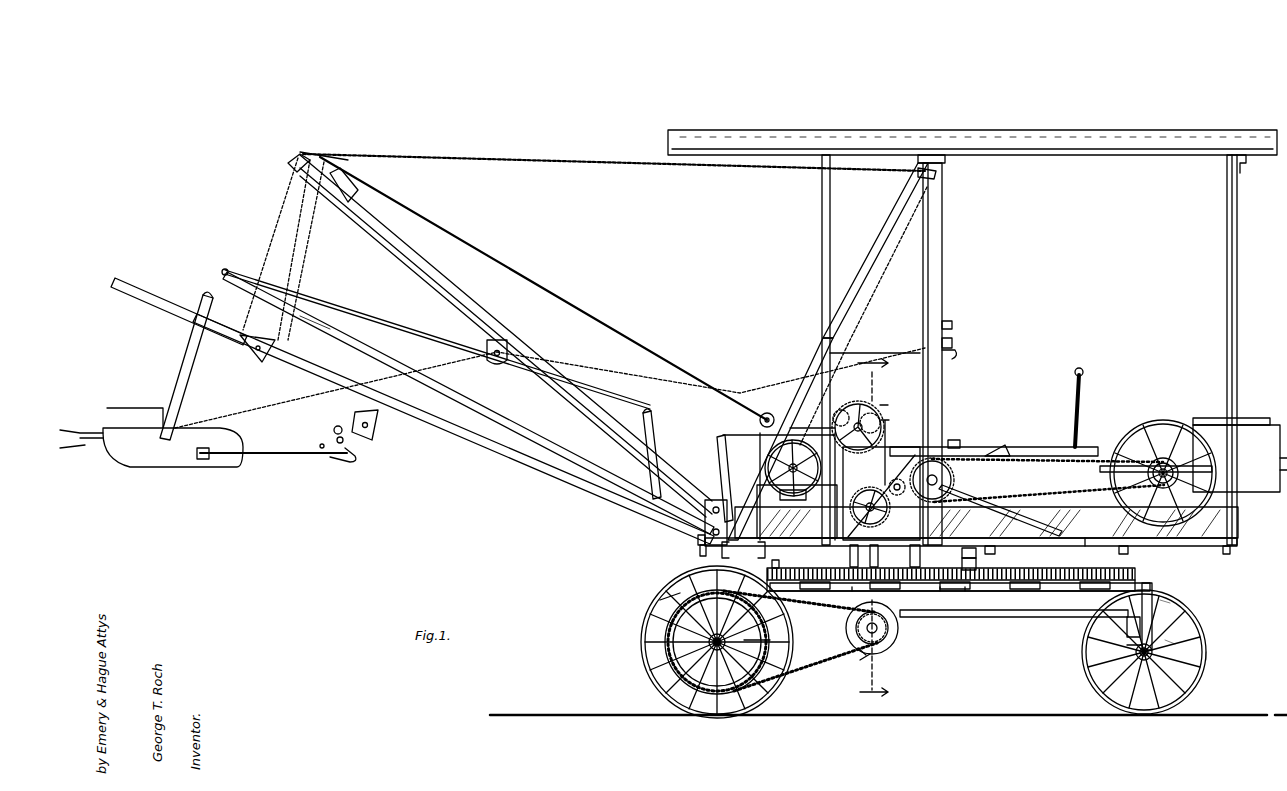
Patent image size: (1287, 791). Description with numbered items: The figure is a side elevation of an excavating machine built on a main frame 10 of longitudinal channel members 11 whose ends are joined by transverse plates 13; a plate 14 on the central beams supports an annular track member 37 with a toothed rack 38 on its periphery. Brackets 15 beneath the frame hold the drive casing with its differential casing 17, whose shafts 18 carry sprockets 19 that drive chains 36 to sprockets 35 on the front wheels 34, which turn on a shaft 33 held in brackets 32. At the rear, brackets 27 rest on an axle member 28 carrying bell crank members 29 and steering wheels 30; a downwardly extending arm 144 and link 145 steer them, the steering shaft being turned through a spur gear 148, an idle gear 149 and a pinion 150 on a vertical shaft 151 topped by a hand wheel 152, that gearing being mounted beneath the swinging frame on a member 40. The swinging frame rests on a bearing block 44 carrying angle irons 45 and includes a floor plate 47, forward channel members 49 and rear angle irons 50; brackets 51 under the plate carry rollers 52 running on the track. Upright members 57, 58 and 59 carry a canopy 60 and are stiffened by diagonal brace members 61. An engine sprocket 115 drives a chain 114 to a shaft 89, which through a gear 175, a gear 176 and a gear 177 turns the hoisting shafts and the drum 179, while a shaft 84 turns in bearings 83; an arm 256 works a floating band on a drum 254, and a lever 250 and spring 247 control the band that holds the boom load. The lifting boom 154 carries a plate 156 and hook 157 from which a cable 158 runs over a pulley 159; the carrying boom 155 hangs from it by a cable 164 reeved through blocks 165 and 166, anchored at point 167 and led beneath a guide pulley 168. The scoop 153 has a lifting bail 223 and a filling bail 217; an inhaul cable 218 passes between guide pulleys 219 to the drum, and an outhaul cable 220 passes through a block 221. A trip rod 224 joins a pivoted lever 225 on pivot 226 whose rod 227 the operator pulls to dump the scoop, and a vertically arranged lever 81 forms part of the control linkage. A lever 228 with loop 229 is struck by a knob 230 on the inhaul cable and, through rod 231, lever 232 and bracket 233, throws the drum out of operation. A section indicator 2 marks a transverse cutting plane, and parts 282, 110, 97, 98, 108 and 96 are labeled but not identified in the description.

The canopy 60 is at (1032, 150).
The upright member 57 is at (822, 276).
The upright member 58 is at (943, 273).
The upright member 59 is at (1227, 281).
The brace member 61 is at (875, 256).
The pulley 159 is at (937, 175).
The cable 158 is at (470, 157).
The cable 164 is at (522, 272).
The guide pulley 168 is at (770, 412).
The plate 156 is at (322, 141).
The hook 157 is at (336, 154).
The lifting boom 154 is at (516, 346).
The block 166 is at (286, 197).
The lifting bail 223 is at (186, 352).
The bar 282 is at (165, 281).
The block 165 is at (292, 308).
The rod 231 is at (496, 418).
The carrying boom 155 is at (500, 442).
The trip rod 224 is at (322, 323).
The point 167 is at (265, 358).
The block 221 is at (497, 362).
The outhaul cable 220 is at (318, 395).
The pivoted lever 225 is at (657, 431).
The pivot 226 is at (662, 506).
The lever 232 is at (698, 540).
The bracket 233 is at (702, 548).
The bracket 51 is at (1020, 548).
The member 40 is at (986, 522).
The channel member 49 is at (743, 550).
The roller 52 is at (895, 591).
The angle iron 45 is at (848, 549).
The bearing block 44 is at (850, 551).
The spur gear 148 is at (834, 590).
The annular track member 37 is at (856, 592).
The idle gear 149 is at (940, 592).
The channel iron member 11 is at (965, 592).
The transverse plate 13 is at (1151, 587).
The main frame 10 is at (1001, 617).
The toothed rack 38 is at (977, 557).
The plate 14 is at (976, 570).
The bracket 15 is at (655, 601).
The bracket 32 is at (642, 653).
The shaft 33 is at (770, 646).
The sprocket wheel 35 is at (770, 638).
The wheel 34 is at (778, 683).
The shaft 18 is at (889, 630).
The differential casing 17 is at (888, 645).
The sprocket wheel 19 is at (857, 654).
The chain 36 is at (862, 660).
The section line 2 is at (873, 527).
The axle member 28 is at (1138, 681).
The wheel 30 is at (1207, 663).
The bell crank member 29 is at (1165, 641).
The bracket 27 is at (1162, 602).
The arm 144 is at (1125, 626).
The link 145 is at (1125, 645).
The sprocket 115 is at (1164, 430).
The gear box 110 is at (872, 412).
The lever 250 is at (1078, 414).
The chain 114 is at (1030, 439).
The chain 97 is at (990, 458).
The shaft 151 is at (1012, 492).
The bearing 83 is at (952, 478).
The pinion 150 is at (1010, 520).
The floor plate 47 is at (1088, 540).
The angle iron member 50 is at (1225, 550).
The shaft 89 is at (958, 440).
The spring 247 is at (996, 446).
The lever 81 is at (952, 344).
The rod 227 is at (952, 326).
The hand wheel 152 is at (959, 355).
The gear 177 is at (766, 470).
The drum 179 is at (760, 440).
The housing 98 is at (848, 512).
The gear 175 is at (850, 403).
The gear 176 is at (882, 408).
The bracket 108 is at (887, 426).
The gear frame 96 is at (890, 442).
The shaft 84 is at (898, 478).
The arm 256 is at (832, 416).
The drum 254 is at (825, 428).
The scoop 153 is at (162, 466).
The filling bail 217 is at (266, 458).
The inhaul cable 218 is at (390, 440).
The knob 230 is at (320, 452).
The guide pulley 219 is at (375, 432).
The lever 228 is at (335, 425).
The loop 229 is at (335, 435).